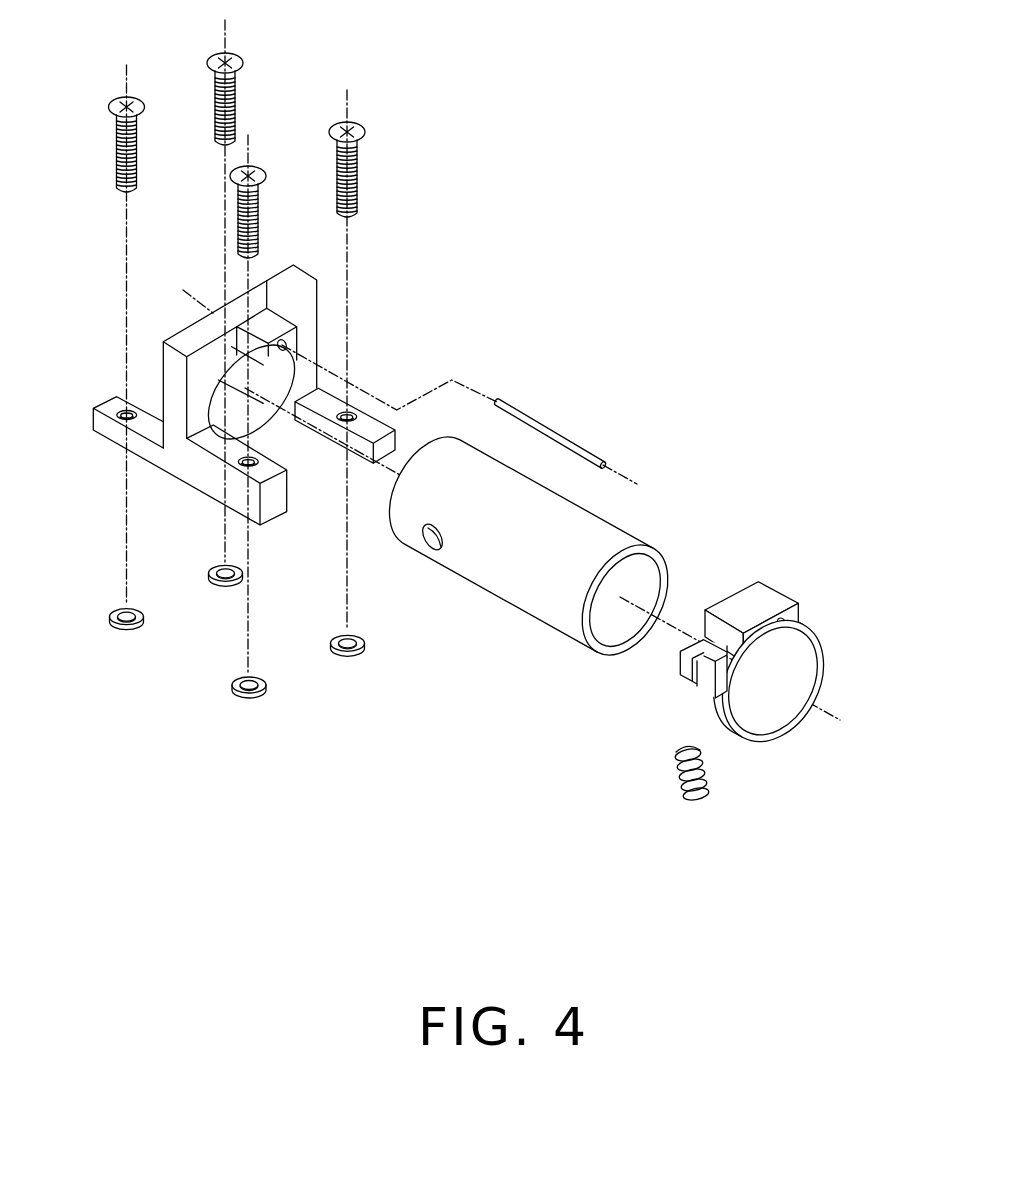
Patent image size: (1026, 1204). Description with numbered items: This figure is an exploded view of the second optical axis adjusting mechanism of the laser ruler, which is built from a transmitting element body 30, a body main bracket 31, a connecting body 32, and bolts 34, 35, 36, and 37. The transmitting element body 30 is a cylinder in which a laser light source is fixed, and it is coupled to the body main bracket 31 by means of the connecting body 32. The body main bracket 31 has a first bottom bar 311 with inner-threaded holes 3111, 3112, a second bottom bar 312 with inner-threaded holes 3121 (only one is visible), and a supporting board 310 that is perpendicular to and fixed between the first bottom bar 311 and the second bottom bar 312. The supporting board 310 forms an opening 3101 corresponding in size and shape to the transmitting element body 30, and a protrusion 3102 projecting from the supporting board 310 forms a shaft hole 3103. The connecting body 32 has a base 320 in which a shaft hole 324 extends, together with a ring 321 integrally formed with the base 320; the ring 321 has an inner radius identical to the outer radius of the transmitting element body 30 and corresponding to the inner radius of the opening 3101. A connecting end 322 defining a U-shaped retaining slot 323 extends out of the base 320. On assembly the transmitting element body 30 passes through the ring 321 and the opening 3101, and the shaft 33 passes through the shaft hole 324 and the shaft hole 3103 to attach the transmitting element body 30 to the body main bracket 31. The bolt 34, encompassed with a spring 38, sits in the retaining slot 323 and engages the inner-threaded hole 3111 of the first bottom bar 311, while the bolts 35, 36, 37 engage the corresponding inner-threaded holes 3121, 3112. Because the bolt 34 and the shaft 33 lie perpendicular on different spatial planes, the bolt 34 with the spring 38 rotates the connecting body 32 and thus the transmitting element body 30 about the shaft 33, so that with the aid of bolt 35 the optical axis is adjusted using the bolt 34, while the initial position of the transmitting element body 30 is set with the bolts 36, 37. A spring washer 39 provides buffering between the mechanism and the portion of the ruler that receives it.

The transmitting element body 30 is at (565, 528).
The body main bracket 31 is at (248, 408).
The connecting body 32 is at (751, 644).
The shaft 33 is at (553, 430).
The bolt 34 is at (259, 172).
The bolt 35 is at (363, 128).
The bolt 36 is at (118, 97).
The bolt 37 is at (215, 52).
The spring 38 is at (710, 777).
The spring washer 39 is at (240, 695).
The supporting board 310 is at (289, 408).
The first bottom bar 311 is at (148, 457).
The second bottom bar 312 is at (390, 408).
The base 320 is at (796, 595).
The ring 321 is at (812, 644).
The connecting end 322 is at (679, 664).
The U-shaped retaining slot 323 is at (702, 682).
The shaft hole 324 is at (786, 621).
The opening 3101 is at (273, 437).
The protrusion 3102 is at (267, 325).
The shaft hole 3103 is at (288, 344).
The inner-threaded hole 3111 is at (237, 457).
The inner-threaded hole 3112 is at (115, 402).
The inner-threaded hole 3121 is at (362, 418).